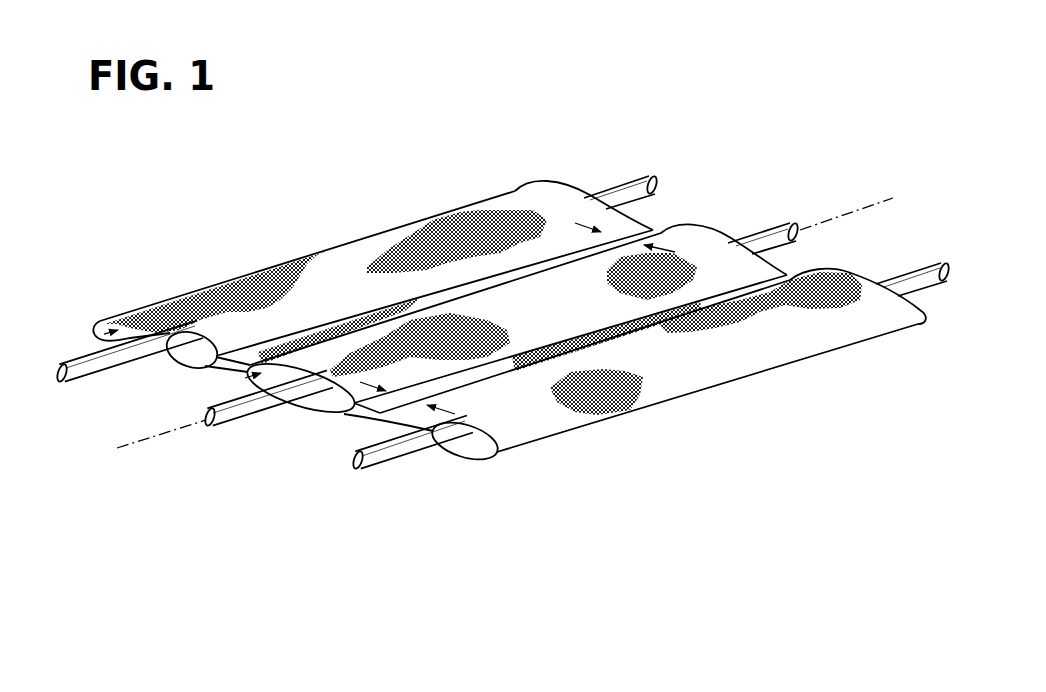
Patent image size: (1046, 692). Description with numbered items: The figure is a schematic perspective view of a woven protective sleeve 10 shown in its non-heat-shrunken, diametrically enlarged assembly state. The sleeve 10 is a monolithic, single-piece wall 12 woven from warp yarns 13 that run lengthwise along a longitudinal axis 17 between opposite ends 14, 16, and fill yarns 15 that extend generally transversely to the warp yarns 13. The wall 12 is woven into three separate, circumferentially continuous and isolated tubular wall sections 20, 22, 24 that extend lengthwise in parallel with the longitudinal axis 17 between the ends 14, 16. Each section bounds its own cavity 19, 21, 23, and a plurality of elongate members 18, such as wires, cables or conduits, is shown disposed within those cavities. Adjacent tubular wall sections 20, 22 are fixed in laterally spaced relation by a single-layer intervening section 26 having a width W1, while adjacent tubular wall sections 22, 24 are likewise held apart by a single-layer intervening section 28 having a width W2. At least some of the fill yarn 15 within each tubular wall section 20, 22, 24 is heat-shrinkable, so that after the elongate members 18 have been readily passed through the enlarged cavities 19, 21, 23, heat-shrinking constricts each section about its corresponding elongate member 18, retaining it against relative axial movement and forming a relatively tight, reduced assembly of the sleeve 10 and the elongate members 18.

The sleeve 10 is at (288, 186).
The wall 12 is at (663, 230).
The warp yarns 13 is at (273, 271).
The end 14 is at (205, 370).
The fill yarns 15 is at (203, 288).
The end 16 is at (797, 274).
The longitudinal axis 17 is at (850, 212).
The elongate members 18 is at (90, 358).
The cavity 19 is at (90, 332).
The tubular wall section 20 is at (553, 200).
The cavity 21 is at (243, 366).
The tubular wall section 22 is at (710, 250).
The cavity 23 is at (481, 449).
The tubular wall section 24 is at (778, 328).
The intervening section 26 is at (443, 292).
The intervening section 28 is at (503, 367).
The width W1 is at (605, 231).
The width W2 is at (443, 415).